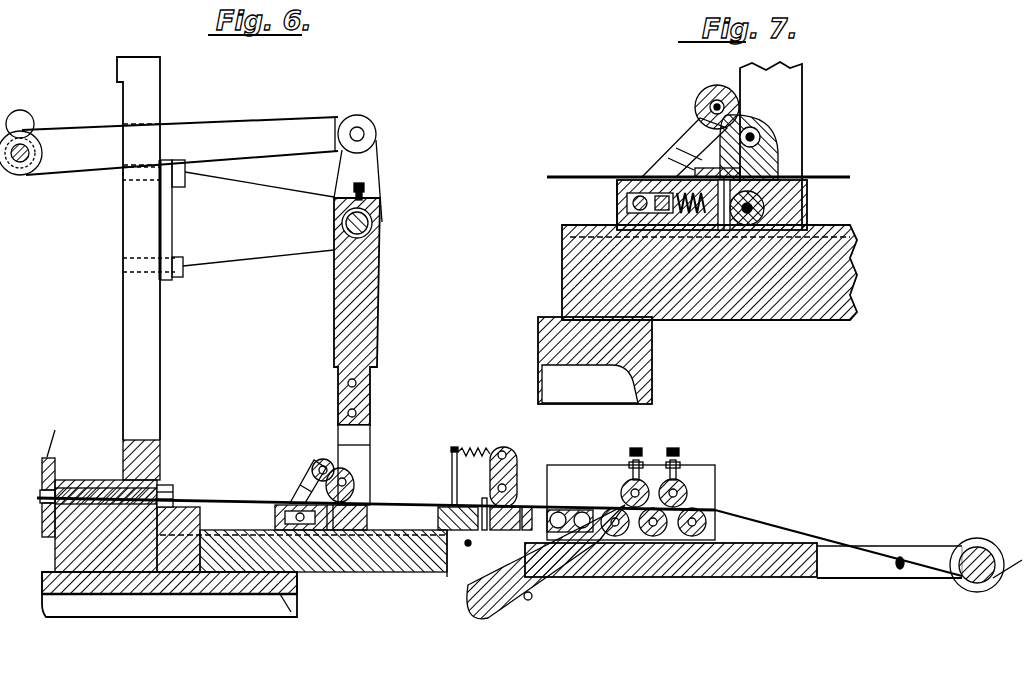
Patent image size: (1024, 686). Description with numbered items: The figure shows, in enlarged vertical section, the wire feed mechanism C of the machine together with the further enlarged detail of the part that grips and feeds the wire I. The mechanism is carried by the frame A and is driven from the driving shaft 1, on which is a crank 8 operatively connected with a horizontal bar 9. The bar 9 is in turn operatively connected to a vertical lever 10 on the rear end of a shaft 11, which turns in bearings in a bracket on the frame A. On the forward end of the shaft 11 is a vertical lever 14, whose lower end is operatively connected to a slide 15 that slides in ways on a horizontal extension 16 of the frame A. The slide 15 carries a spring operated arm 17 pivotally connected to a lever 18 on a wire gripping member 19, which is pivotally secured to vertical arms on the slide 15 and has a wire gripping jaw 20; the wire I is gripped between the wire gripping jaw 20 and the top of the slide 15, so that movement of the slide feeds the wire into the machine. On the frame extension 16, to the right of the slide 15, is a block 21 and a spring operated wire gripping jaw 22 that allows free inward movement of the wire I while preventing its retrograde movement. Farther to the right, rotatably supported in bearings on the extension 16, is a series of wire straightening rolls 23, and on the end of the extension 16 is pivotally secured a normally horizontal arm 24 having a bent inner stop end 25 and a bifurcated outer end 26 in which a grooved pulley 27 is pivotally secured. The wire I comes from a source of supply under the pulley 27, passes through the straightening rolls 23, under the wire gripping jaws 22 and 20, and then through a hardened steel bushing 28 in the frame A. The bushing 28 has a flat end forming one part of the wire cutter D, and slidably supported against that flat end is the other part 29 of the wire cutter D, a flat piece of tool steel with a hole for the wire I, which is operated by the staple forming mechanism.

In FIG. 6, the driving shaft 1 is at (20, 110).
In FIG. 6, the crank 8 is at (19, 170).
In FIG. 6, the horizontal bar 9 is at (257, 124).
In FIG. 6, the vertical lever 10 is at (372, 176).
In FIG. 6, the shaft 11 is at (382, 224).
In FIG. 6, the vertical lever 14 is at (334, 338).
In FIG. 6, the slide 15 is at (322, 530).
In FIG. 7, the slide 15 is at (617, 187).
In FIG. 6, the horizontal extension 16 is at (403, 563).
In FIG. 7, the horizontal extension 16 is at (573, 268).
In FIG. 6, the spring operated arm 17 is at (300, 494).
In FIG. 7, the spring operated arm 17 is at (654, 163).
In FIG. 6, the lever 18 is at (322, 460).
In FIG. 7, the lever 18 is at (700, 93).
In FIG. 6, the wire gripping member 19 is at (338, 480).
In FIG. 7, the wire gripping member 19 is at (750, 124).
In FIG. 6, the wire gripping jaw 20 is at (345, 520).
In FIG. 7, the wire gripping jaw 20 is at (735, 177).
In FIG. 6, the block 21 is at (470, 546).
In FIG. 6, the spring operated wire gripping jaw 22 is at (483, 500).
In FIG. 6, the wire straightening rolls 23 is at (723, 483).
In FIG. 6, the normally horizontal arm 24 is at (777, 570).
In FIG. 6, the bent inner stop end 25 is at (530, 600).
In FIG. 6, the bifurcated outer end 26 is at (925, 553).
In FIG. 6, the grooved pulley 27 is at (977, 588).
In FIG. 6, the hardened steel bushing 28 is at (85, 482).
In FIG. 6, the other part of the wire cutter 29 is at (42, 460).
In FIG. 6, the frame A is at (135, 333).
In FIG. 7, the frame A is at (652, 357).
In FIG. 6, the wire feed mechanism C is at (373, 338).
In FIG. 7, the wire feed mechanism C is at (800, 113).
In FIG. 6, the wire cutter D is at (56, 434).
In FIG. 6, the wire I is at (225, 498).
In FIG. 7, the wire I is at (563, 177).